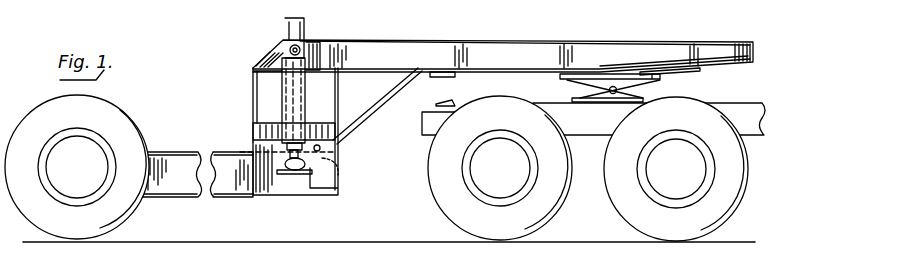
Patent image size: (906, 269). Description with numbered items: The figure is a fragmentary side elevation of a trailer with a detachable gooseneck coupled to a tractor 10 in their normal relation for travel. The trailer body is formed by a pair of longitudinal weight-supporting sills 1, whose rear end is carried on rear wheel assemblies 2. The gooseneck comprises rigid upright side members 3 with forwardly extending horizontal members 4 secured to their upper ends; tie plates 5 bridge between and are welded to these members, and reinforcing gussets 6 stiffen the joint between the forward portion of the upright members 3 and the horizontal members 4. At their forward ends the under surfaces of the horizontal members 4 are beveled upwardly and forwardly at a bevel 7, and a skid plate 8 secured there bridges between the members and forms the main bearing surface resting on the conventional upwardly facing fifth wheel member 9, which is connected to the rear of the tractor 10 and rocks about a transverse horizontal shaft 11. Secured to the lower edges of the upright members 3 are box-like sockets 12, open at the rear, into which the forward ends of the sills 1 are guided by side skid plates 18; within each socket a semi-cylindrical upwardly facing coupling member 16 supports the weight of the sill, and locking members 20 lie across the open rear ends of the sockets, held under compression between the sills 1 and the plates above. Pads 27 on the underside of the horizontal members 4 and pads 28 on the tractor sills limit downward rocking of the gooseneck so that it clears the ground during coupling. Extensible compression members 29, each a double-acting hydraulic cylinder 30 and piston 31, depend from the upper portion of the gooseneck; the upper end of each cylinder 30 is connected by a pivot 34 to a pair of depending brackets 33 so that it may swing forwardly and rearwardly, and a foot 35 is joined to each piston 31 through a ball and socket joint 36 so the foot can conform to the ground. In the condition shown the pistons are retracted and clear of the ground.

The longitudinal sills 1 is at (203, 151).
The rear wheel assemblies 2 is at (130, 120).
The upright side members 3 is at (260, 88).
The horizontal members 4 is at (395, 62).
The tie plates 5 is at (254, 105).
The reinforcing gussets 6 is at (361, 105).
The bevel 7 is at (723, 63).
The skid plate 8 is at (689, 70).
The fifth wheel member 9 is at (661, 79).
The tractor 10 is at (739, 107).
The horizontal shaft 11 is at (610, 93).
The sockets 12 is at (328, 168).
The coupling member 16 is at (339, 183).
The side skid plates 18 is at (252, 184).
The locking members 20 is at (287, 167).
The pad 27 is at (441, 78).
The pad 28 is at (449, 100).
The extensible compression members 29 is at (271, 78).
The cylinder 30 is at (303, 106).
The piston 31 is at (320, 149).
The depending brackets 33 is at (301, 46).
The pivots 34 is at (284, 48).
The foot 35 is at (292, 176).
The ball and socket joint 36 is at (276, 173).